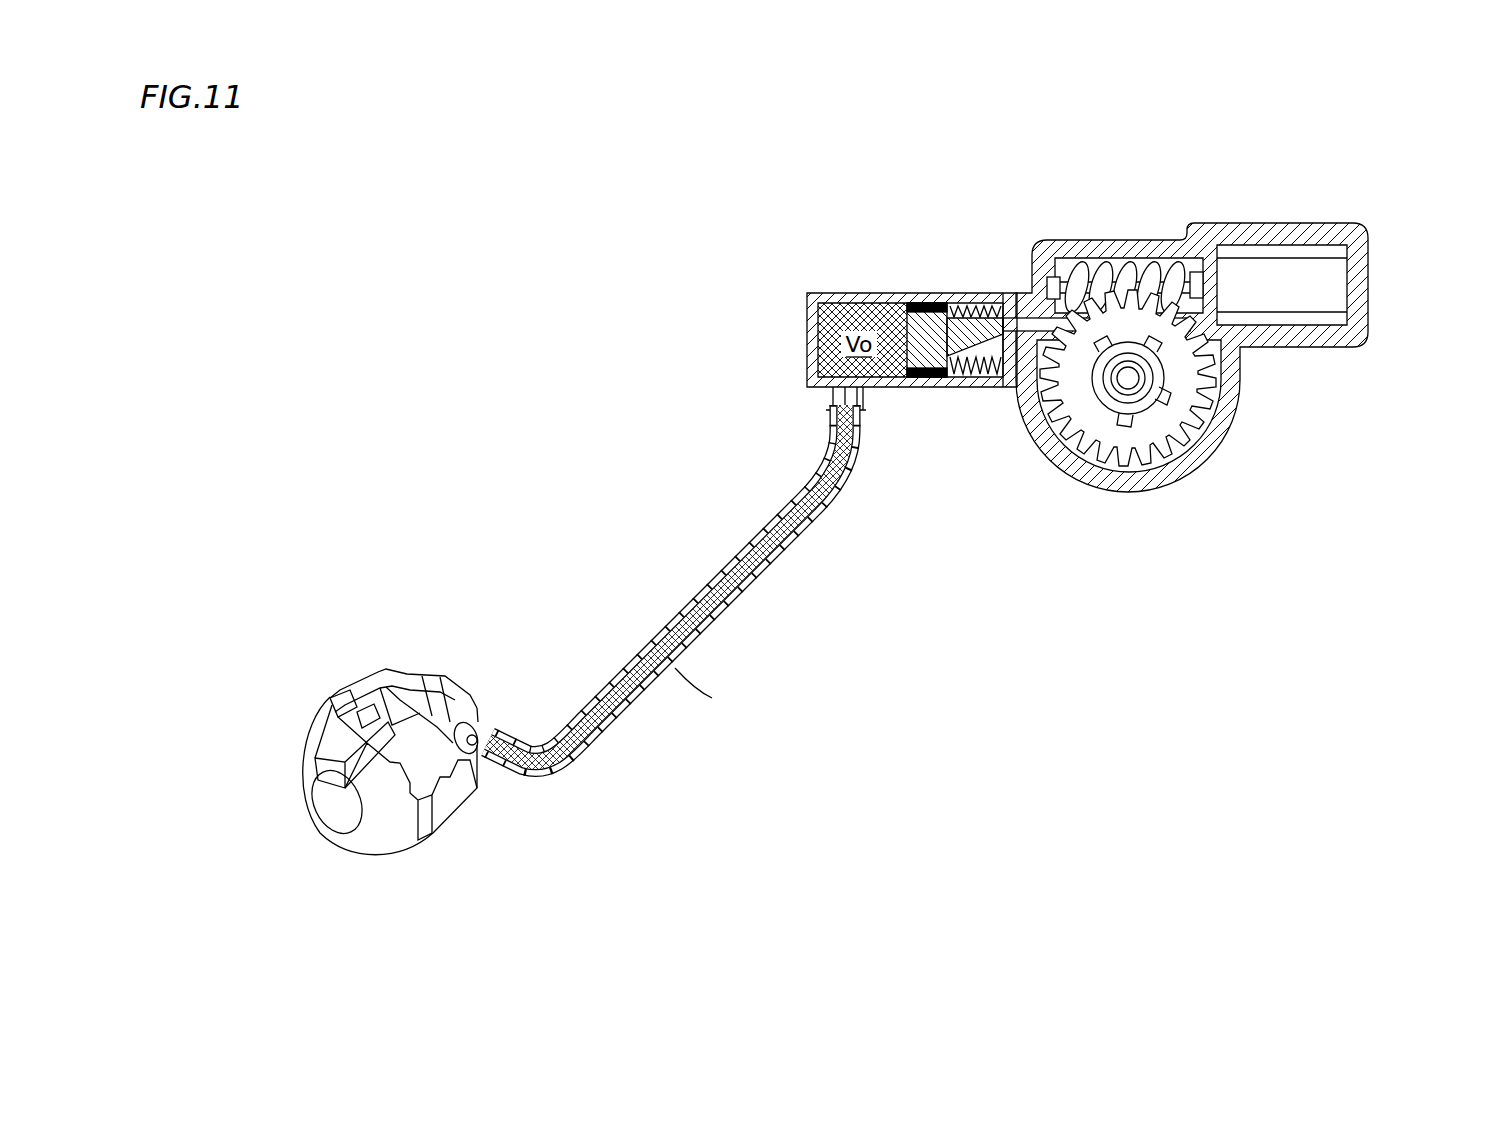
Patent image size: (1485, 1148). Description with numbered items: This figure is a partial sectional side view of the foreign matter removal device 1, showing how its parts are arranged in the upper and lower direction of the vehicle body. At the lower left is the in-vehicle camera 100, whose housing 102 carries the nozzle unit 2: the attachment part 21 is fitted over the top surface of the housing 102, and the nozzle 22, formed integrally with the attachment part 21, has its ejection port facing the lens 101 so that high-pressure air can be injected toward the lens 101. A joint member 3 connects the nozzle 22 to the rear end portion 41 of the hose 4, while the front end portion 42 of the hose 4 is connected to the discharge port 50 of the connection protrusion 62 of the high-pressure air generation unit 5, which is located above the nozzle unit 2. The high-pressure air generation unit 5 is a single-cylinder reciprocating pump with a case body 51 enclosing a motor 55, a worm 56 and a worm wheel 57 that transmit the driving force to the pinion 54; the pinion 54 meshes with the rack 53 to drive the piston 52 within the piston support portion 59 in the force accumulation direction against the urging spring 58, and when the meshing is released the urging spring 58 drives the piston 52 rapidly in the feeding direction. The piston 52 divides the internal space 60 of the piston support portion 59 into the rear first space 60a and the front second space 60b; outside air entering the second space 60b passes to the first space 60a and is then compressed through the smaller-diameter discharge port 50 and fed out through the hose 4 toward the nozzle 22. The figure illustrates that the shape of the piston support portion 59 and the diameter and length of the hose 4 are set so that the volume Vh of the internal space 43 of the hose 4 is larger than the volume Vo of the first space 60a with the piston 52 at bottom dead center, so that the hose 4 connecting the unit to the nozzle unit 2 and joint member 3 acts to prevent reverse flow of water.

The foreign matter removal device 1 is at (571, 328).
The nozzle unit 2 is at (347, 672).
The joint member 3 is at (423, 700).
The hose 4 is at (656, 604).
The high-pressure air generation unit 5 is at (1146, 210).
The attachment part 21 is at (343, 700).
The nozzle 22 is at (338, 745).
The rear end portion 41 is at (482, 793).
The front end portion 42 is at (828, 400).
The internal space 43 is at (725, 615).
The discharge port 50 is at (862, 438).
The case body 51 is at (1250, 228).
The piston 52 is at (890, 310).
The rack 53 is at (1030, 330).
The pinion 54 is at (1062, 455).
The motor 55 is at (1330, 275).
The worm 56 is at (1095, 265).
The worm wheel 57 is at (1190, 440).
The urging spring 58 is at (1003, 298).
The piston support portion 59 is at (820, 293).
The internal space 60 is at (865, 194).
The first space 60a is at (848, 300).
The second space 60b is at (960, 292).
The connection protrusion 62 is at (870, 402).
The in-vehicle camera 100 is at (368, 860).
The lens 101 is at (330, 812).
The housing 102 is at (395, 780).